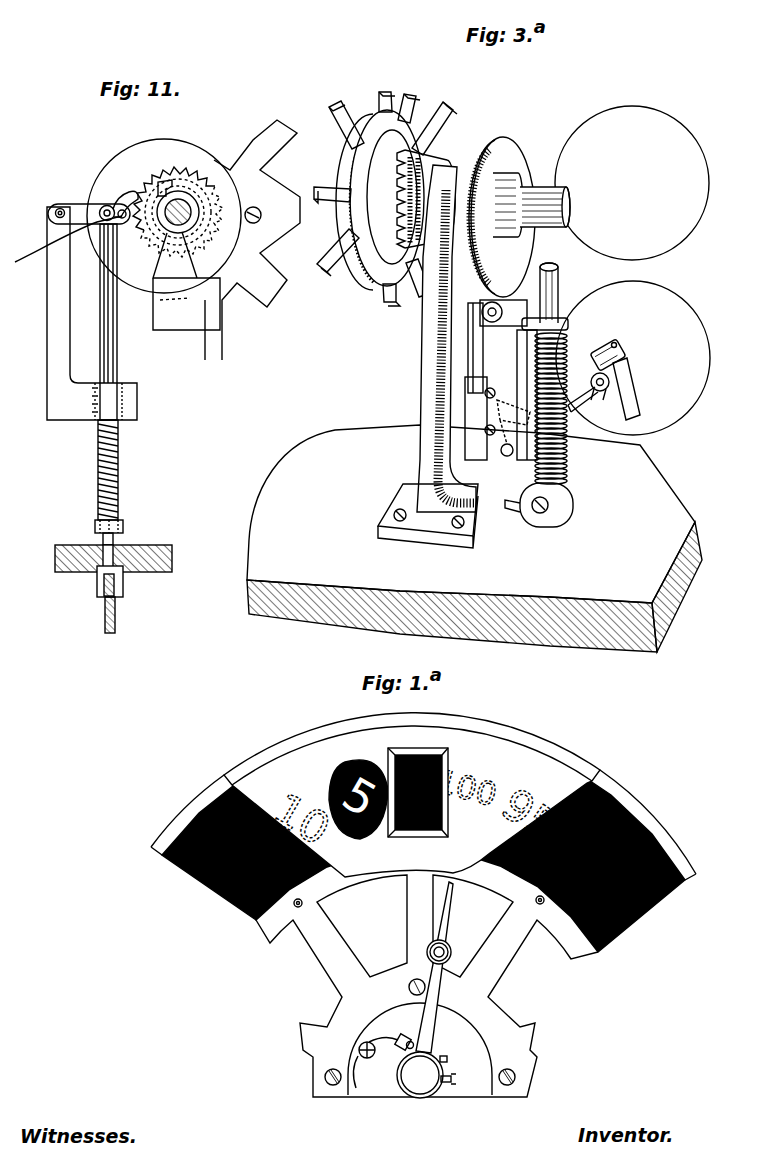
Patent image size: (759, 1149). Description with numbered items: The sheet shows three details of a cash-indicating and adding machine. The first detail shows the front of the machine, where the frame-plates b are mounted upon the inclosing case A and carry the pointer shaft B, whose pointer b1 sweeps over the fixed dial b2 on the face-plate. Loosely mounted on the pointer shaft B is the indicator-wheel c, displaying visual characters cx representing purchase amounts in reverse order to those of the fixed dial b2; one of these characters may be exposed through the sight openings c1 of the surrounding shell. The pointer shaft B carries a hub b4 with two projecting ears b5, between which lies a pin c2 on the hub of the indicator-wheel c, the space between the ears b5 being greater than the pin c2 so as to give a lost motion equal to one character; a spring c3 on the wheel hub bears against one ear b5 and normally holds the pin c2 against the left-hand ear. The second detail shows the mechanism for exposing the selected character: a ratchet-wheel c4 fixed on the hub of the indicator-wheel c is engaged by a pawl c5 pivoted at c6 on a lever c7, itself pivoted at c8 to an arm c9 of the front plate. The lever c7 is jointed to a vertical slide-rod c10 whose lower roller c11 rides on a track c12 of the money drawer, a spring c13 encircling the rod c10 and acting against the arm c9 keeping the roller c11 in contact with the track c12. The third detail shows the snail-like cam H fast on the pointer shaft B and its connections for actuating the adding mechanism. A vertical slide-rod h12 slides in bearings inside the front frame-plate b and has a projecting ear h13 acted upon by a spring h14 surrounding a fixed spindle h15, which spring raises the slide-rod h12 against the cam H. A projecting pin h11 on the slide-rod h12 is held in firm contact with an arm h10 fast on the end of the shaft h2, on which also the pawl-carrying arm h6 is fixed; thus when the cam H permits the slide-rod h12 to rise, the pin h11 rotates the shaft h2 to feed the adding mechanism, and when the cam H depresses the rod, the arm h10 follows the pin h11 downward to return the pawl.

In FIG. 11, the indicator-wheel c is at (274, 163).
In FIG. 3A, the indicator-wheel c is at (422, 82).
In FIG. 1A, the indicator-wheel c is at (517, 948).
In FIG. 1A, the sight openings c1 is at (446, 768).
In FIG. 1A, the pin c2 is at (401, 1038).
In FIG. 1A, the spring c3 is at (360, 1059).
In FIG. 11, the ratchet-wheel c4 is at (196, 180).
In FIG. 3A, the ratchet-wheel c4 is at (433, 165).
In FIG. 11, the pawl c5 is at (126, 198).
In FIG. 11, the pawl pivot c6 is at (65, 245).
In FIG. 11, the lever c7 is at (80, 204).
In FIG. 11, the lever pivot c8 is at (60, 208).
In FIG. 11, the arm of the front plate c9 is at (48, 315).
In FIG. 11, the vertical slide-rod c10 is at (118, 351).
In FIG. 11, the roller c11 is at (112, 586).
In FIG. 11, the track c12 is at (115, 621).
In FIG. 11, the spring c13 is at (120, 473).
In FIG. 1A, the visual characters cx is at (670, 851).
In FIG. 3A, the frame-plates b is at (425, 437).
In FIG. 1A, the pointer b1 is at (446, 987).
In FIG. 1A, the fixed dial b2 is at (522, 752).
In FIG. 11, the hub b4 is at (193, 216).
In FIG. 1A, the hub b4 is at (404, 1096).
In FIG. 1A, the ears b5 is at (414, 1044).
In FIG. 11, the pointer shaft B is at (186, 281).
In FIG. 3A, the pointer shaft B is at (573, 207).
In FIG. 11, the inclosing case A is at (172, 558).
In FIG. 3A, the inclosing case A is at (474, 538).
In FIG. 3A, the cam H is at (513, 152).
In FIG. 3A, the fixed shaft h2 is at (612, 382).
In FIG. 3A, the arm h6 is at (640, 410).
In FIG. 3A, the arm h10 is at (581, 390).
In FIG. 3A, the projecting pin h11 is at (568, 443).
In FIG. 3A, the vertical slide-rod h12 is at (517, 483).
In FIG. 3A, the projecting ear h13 is at (565, 326).
In FIG. 3A, the spring h14 is at (577, 411).
In FIG. 3A, the fixed spindle h15 is at (560, 292).